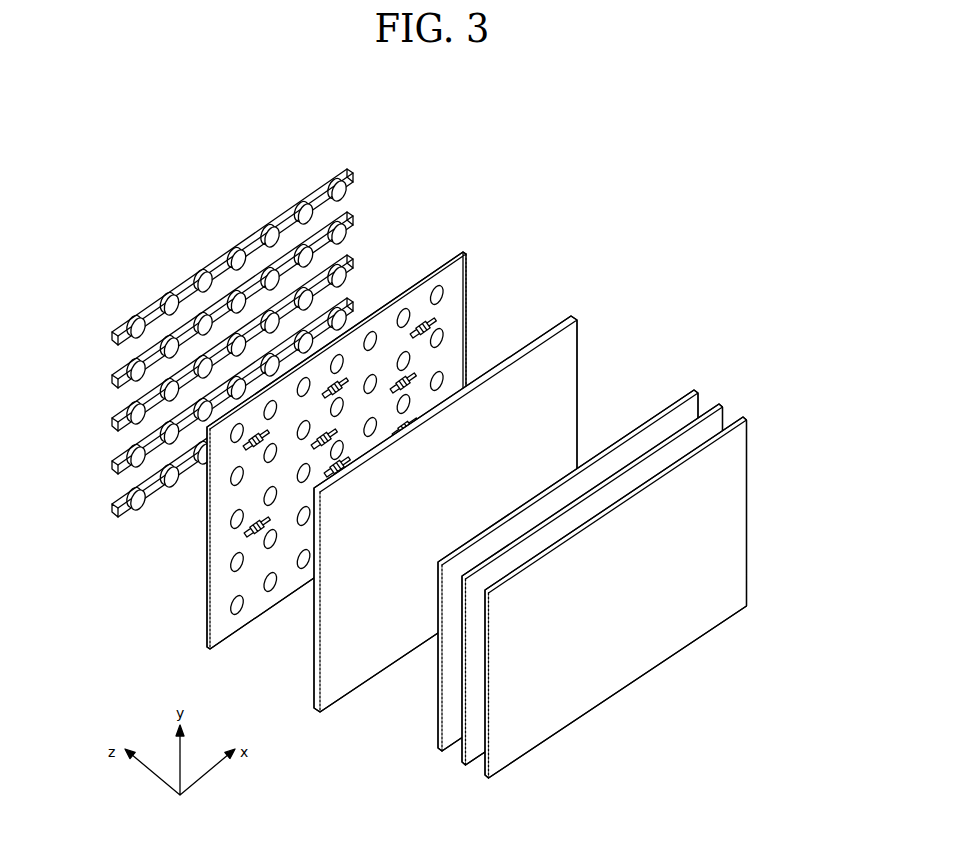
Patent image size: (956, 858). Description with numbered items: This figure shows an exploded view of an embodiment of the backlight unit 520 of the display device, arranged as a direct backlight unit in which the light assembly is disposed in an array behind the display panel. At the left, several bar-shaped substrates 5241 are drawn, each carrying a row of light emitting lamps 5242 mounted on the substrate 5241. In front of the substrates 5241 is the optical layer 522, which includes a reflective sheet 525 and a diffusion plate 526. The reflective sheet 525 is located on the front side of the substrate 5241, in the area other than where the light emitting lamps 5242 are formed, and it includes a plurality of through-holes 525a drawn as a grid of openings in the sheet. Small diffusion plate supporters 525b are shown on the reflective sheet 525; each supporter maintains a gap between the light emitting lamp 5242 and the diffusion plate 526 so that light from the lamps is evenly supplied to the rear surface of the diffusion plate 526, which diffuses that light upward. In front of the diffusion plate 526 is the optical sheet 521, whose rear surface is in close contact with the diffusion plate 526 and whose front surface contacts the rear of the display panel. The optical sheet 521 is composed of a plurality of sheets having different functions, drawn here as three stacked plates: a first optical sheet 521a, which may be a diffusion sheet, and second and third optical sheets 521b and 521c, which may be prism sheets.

The backlight unit 520 is at (160, 151).
The substrate 5241 is at (111, 337).
The light emitting lamp 5242 is at (112, 373).
The optical layer 522 is at (628, 258).
The reflective sheet 525 is at (463, 252).
The through-hole 525a is at (231, 563).
The diffusion plate supporter 525b is at (244, 530).
The diffusion plate 526 is at (573, 316).
The optical sheet 521 is at (816, 375).
The first optical sheet 521a is at (743, 418).
The second optical sheet 521b is at (720, 404).
The third optical sheet 521c is at (694, 390).